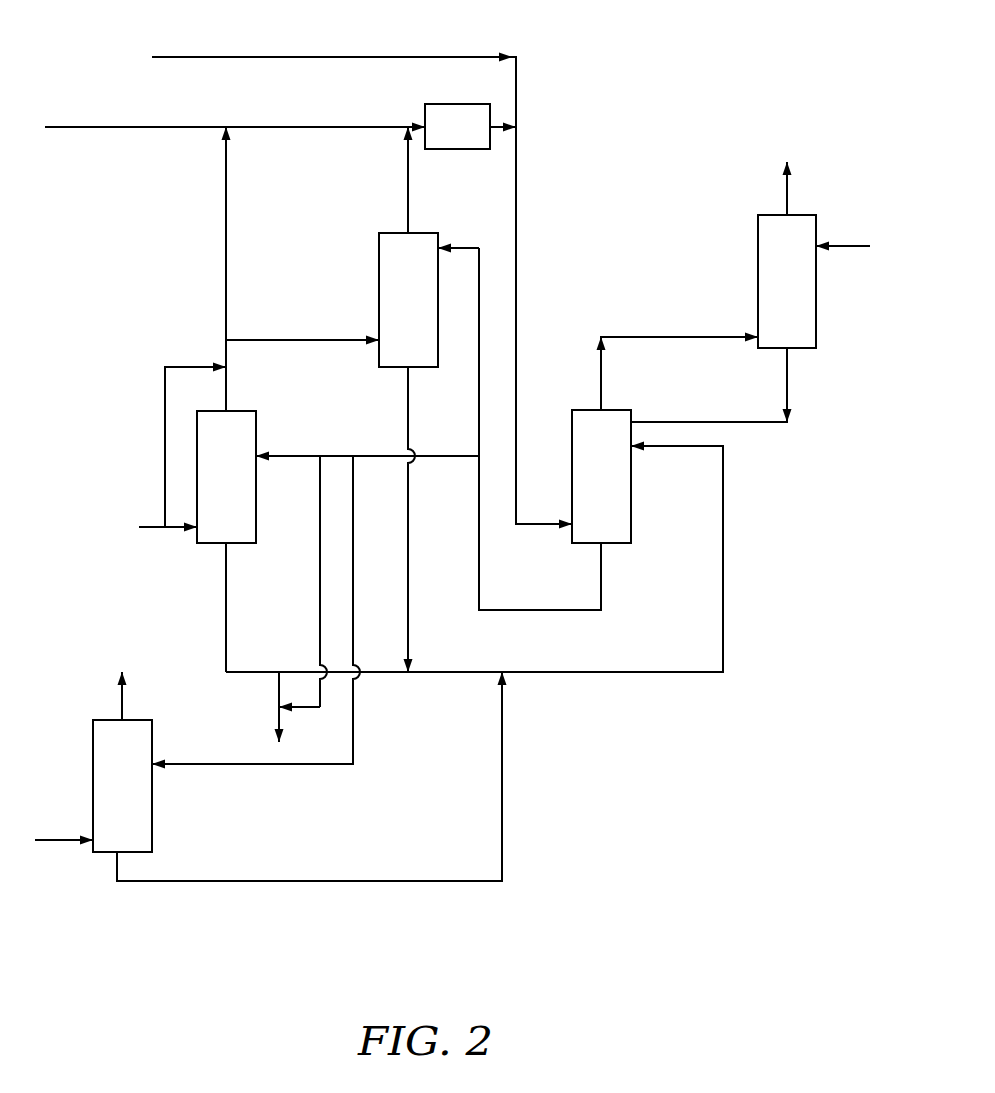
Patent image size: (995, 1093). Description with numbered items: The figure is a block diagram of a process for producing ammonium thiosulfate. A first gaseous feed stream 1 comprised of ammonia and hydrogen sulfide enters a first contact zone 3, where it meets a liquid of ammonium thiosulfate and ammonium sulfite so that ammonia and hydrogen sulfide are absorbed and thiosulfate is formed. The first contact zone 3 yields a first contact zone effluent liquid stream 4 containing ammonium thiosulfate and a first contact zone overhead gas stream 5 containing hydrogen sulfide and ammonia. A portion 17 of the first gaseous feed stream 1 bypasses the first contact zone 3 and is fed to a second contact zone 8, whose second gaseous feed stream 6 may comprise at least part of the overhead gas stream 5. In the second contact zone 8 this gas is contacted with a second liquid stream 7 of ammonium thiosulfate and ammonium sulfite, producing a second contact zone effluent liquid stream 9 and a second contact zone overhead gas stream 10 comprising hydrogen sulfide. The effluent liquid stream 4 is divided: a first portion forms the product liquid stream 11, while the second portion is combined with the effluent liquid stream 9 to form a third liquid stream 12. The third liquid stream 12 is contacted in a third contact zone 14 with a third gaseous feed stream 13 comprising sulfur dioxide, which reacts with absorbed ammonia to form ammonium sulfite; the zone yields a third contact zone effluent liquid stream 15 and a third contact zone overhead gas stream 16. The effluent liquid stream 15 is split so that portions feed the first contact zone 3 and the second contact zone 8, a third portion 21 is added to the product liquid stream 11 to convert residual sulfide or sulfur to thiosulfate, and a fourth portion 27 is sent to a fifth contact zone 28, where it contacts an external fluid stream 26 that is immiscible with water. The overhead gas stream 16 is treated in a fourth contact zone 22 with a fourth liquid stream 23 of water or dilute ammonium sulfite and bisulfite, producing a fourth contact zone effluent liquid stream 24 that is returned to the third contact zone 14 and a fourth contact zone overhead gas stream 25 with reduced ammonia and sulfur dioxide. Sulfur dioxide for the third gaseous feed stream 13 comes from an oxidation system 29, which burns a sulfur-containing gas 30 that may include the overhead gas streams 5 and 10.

The first gaseous feed stream 1 is at (150, 527).
The first contact zone 3 is at (258, 430).
The first contact zone effluent liquid stream 4 is at (228, 612).
The first contact zone overhead gas stream 5 is at (228, 393).
The second gaseous feed stream 6 is at (302, 322).
The second liquid stream 7 is at (462, 247).
The second contact zone 8 is at (422, 232).
The second contact zone effluent liquid stream 9 is at (410, 515).
The second contact zone overhead gas stream 10 is at (408, 197).
The product liquid stream 11 is at (277, 723).
The third liquid stream 12 is at (650, 670).
The third gaseous feed stream 13 is at (348, 57).
The third contact zone 14 is at (585, 408).
The third contact zone effluent liquid stream 15 is at (603, 595).
The third contact zone overhead gas stream 16 is at (603, 385).
The portion of the first gaseous feed stream 17 is at (165, 402).
The third portion of the third contact zone effluent liquid stream 21 is at (320, 560).
The fourth contact zone 22 is at (818, 217).
The fourth liquid stream 23 is at (852, 246).
The fourth contact zone effluent liquid stream 24 is at (789, 386).
The fourth contact zone overhead gas stream 25 is at (787, 188).
The external fluid stream 26 is at (58, 838).
The fourth portion of the third contact zone effluent liquid stream 27 is at (220, 765).
The fifth contact zone 28 is at (93, 773).
The oxidation system 29 is at (448, 104).
The gas 30 is at (262, 127).